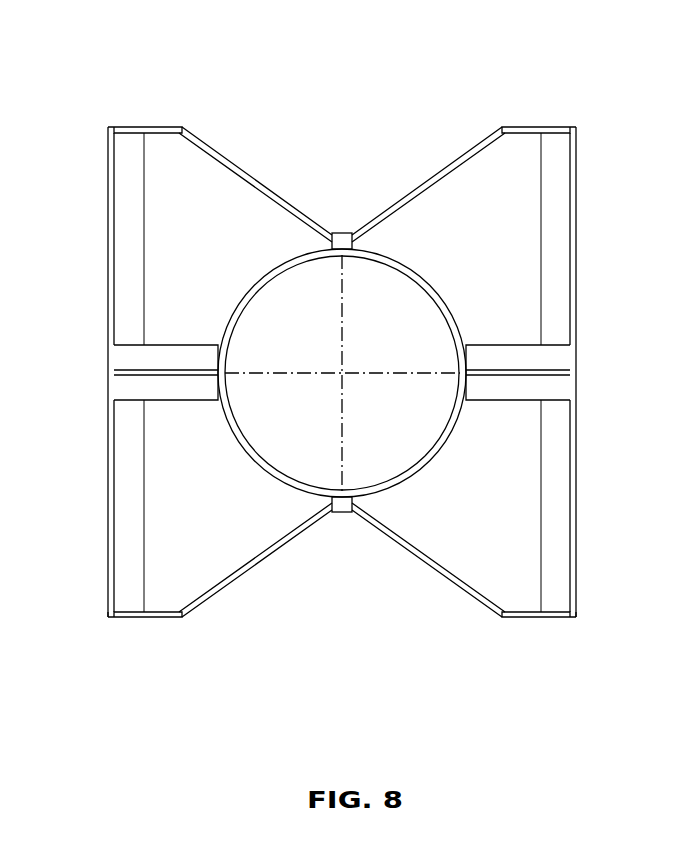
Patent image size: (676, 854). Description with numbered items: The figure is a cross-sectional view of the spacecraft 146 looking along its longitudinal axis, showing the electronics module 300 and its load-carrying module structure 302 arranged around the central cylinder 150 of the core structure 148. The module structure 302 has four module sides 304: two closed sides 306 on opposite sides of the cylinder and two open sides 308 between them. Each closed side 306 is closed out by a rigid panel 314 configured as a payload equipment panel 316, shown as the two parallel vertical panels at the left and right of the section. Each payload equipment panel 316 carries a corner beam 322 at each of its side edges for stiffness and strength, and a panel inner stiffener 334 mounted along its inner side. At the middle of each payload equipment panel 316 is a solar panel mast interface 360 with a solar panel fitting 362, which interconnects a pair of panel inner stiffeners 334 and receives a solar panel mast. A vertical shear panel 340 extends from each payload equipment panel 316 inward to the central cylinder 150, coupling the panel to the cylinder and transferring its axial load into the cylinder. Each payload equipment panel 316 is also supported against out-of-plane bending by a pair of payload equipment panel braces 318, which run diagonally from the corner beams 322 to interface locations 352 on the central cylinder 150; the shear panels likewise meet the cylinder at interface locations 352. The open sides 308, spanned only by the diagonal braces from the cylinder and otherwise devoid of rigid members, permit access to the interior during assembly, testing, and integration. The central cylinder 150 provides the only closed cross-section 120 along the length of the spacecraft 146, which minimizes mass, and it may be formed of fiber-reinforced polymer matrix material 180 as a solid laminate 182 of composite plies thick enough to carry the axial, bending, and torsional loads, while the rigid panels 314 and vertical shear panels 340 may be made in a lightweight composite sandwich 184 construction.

The open side 308 is at (330, 88).
The electronics module 300 is at (113, 127).
The module structure 302 is at (112, 165).
The module side 304 is at (112, 235).
The closed side 306 is at (112, 322).
The rigid panel 314 is at (112, 518).
The payload equipment panel 316 is at (576, 488).
The payload equipment panel brace 318 is at (242, 168).
The corner beam 322 is at (150, 127).
The panel inner stiffener 334 is at (135, 270).
The vertical shear panel 340 is at (173, 370).
The interface location 352 is at (340, 233).
The solar panel mast interface 360 is at (113, 365).
The solar panel fitting 362 is at (127, 387).
The spacecraft 146 is at (576, 130).
The closed cross-section 120 is at (421, 274).
The central cylinder 150 is at (277, 267).
The core structure 148 is at (243, 298).
The fiber-reinforced polymer matrix material 180 is at (265, 478).
The solid laminate 182 is at (400, 477).
The composite sandwich 184 is at (433, 458).